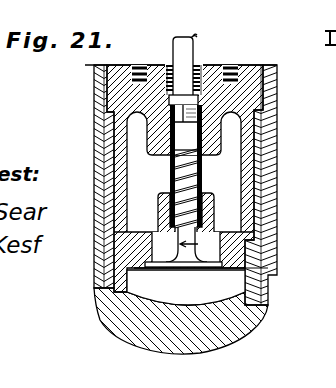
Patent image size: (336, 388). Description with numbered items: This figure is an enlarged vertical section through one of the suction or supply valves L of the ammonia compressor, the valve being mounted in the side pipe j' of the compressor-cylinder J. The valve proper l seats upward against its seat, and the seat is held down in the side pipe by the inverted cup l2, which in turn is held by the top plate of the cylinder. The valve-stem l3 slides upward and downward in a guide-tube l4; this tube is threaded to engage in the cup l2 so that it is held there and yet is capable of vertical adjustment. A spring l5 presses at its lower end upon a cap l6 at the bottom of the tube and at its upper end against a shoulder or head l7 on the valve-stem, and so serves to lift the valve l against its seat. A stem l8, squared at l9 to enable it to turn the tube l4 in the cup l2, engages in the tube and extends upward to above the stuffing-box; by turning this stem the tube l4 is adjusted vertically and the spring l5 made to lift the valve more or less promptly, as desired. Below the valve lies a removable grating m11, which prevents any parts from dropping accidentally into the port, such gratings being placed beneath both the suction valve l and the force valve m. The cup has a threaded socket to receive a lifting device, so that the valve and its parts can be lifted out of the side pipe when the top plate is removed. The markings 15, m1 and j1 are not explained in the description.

The valve proper l is at (268, 283).
The inverted cup l2 is at (136, 199).
The valve-stem l3 is at (214, 232).
The guide-tube l4 is at (202, 175).
The spring l5 is at (205, 192).
The cap l6 is at (159, 226).
The shoulder or head l7 is at (185, 138).
The stem l8 is at (193, 61).
The squared portion l9 is at (203, 109).
The suction-valve L is at (181, 48).
The threaded groove 15 is at (251, 58).
The force-valve proper m is at (231, 64).
The threaded groove m1 is at (146, 54).
The removable gratings m11 is at (268, 288).
The outer shell j1 is at (280, 223).
The compressor-cylinder J is at (144, 314).
The side pipe j' is at (205, 310).